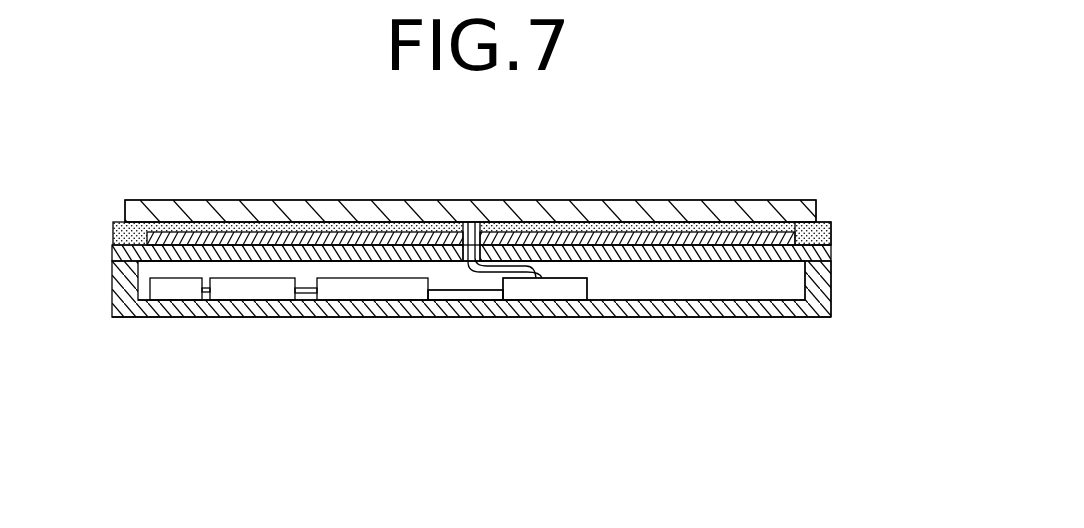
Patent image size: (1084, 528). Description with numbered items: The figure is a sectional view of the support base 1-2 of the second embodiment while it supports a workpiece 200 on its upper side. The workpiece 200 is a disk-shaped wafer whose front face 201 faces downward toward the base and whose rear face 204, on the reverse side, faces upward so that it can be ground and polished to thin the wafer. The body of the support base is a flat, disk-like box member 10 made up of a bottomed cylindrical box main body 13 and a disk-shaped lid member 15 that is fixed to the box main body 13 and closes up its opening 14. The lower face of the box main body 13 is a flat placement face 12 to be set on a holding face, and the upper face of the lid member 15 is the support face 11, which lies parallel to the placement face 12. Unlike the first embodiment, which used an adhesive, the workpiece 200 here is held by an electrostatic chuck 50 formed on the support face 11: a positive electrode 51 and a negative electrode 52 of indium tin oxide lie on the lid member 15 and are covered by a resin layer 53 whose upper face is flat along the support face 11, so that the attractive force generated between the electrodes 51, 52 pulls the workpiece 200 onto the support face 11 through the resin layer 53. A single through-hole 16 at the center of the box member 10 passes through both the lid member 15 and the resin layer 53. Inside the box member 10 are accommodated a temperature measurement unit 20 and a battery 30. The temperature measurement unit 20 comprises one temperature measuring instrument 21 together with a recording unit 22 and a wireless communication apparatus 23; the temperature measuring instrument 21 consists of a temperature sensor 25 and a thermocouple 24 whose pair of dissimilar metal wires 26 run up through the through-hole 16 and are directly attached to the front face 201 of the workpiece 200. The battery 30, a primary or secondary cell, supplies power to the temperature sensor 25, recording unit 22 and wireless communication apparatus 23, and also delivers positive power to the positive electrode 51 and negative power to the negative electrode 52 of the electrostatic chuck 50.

The support base 1-2 is at (890, 277).
The box member 10 is at (893, 388).
The support face 11 is at (775, 230).
The placement face 12 is at (640, 317).
The box main body 13 is at (843, 290).
The opening 14 is at (800, 262).
The lid member 15 is at (843, 253).
The through-hole 16 is at (467, 236).
The temperature measurement unit 20 is at (523, 435).
The temperature measuring instrument 21 is at (542, 390).
The recording unit 22 is at (257, 290).
The wireless communication apparatus 23 is at (182, 290).
The thermocouple 24 is at (480, 287).
The temperature sensor 25 is at (525, 290).
The metal wires 26 is at (517, 265).
The battery 30 is at (368, 290).
The electrostatic chuck 50 is at (838, 232).
The positive electrode 51 is at (395, 236).
The negative electrode 52 is at (615, 236).
The resin layer 53 is at (112, 233).
The workpiece 200 is at (105, 199).
The front face 201 is at (131, 228).
The rear face 204 is at (203, 202).